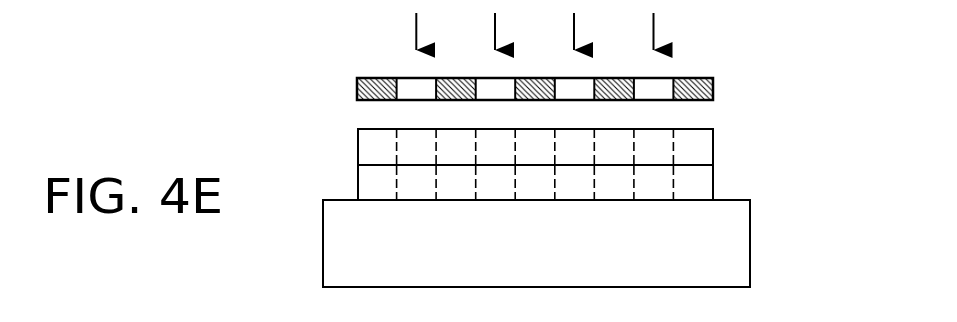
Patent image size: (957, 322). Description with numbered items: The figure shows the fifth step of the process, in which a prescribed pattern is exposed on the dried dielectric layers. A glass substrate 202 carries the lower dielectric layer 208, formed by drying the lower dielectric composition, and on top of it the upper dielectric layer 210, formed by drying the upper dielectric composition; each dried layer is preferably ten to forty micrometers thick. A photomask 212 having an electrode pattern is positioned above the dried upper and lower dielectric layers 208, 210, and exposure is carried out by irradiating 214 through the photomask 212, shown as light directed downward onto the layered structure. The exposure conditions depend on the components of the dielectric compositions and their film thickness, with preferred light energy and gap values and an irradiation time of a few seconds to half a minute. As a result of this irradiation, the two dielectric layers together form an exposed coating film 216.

The substrate 202 is at (750, 248).
The lower dielectric layer 208 is at (713, 184).
The upper dielectric layer 210 is at (713, 148).
The photomask 212 is at (713, 89).
The irradiating 214 is at (654, 30).
The exposed coating film 216 is at (821, 130).